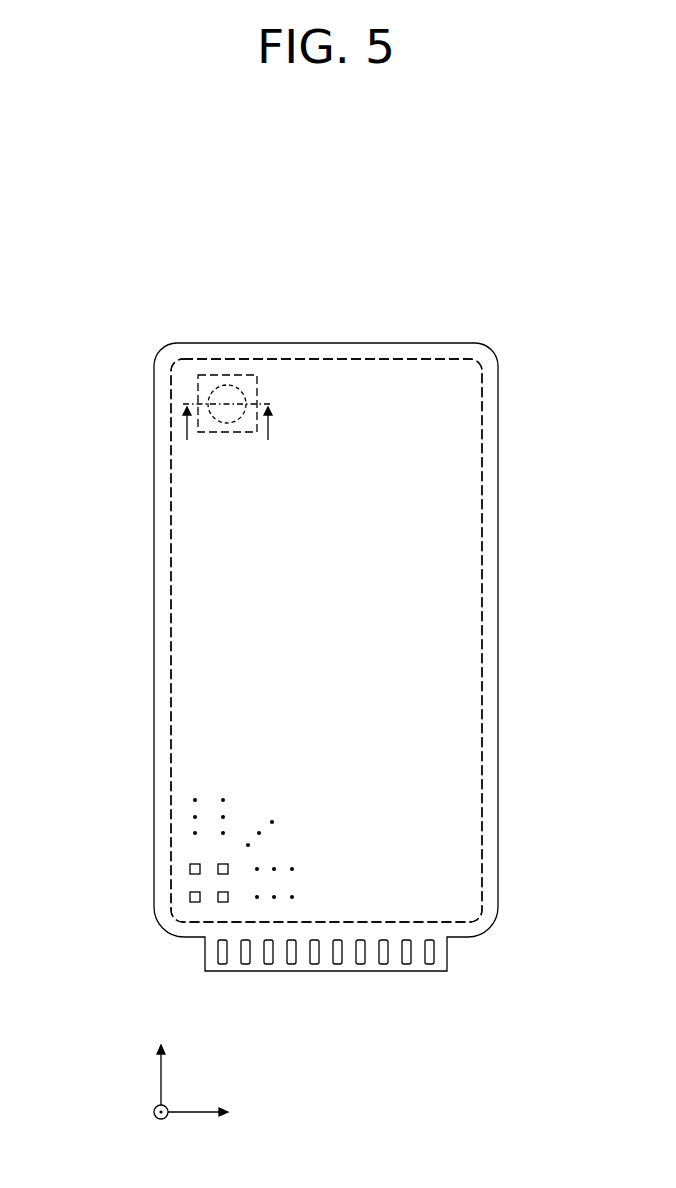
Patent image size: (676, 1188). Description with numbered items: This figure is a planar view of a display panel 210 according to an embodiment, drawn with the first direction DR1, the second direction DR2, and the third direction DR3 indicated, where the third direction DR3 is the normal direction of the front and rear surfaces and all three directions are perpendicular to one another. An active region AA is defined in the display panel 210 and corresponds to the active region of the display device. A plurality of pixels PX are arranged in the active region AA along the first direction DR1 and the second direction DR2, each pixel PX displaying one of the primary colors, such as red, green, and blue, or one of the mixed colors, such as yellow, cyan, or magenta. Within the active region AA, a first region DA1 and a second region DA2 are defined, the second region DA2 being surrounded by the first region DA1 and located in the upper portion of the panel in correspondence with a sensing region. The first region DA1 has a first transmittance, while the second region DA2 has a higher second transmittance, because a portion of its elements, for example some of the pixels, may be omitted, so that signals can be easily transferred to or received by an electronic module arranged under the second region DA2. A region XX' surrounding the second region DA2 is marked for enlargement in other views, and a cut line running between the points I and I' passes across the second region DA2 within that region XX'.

The display panel 210 is at (441, 260).
The active region AA is at (342, 281).
The first region DA1 is at (315, 378).
The second region DA2 is at (225, 386).
The region XX' is at (181, 388).
The cross-section line end I is at (187, 436).
The cross-section line end I' is at (269, 436).
The pixel PX is at (190, 866).
The first direction DR1 is at (219, 1112).
The second direction DR2 is at (161, 1063).
The third direction DR3 is at (161, 1126).